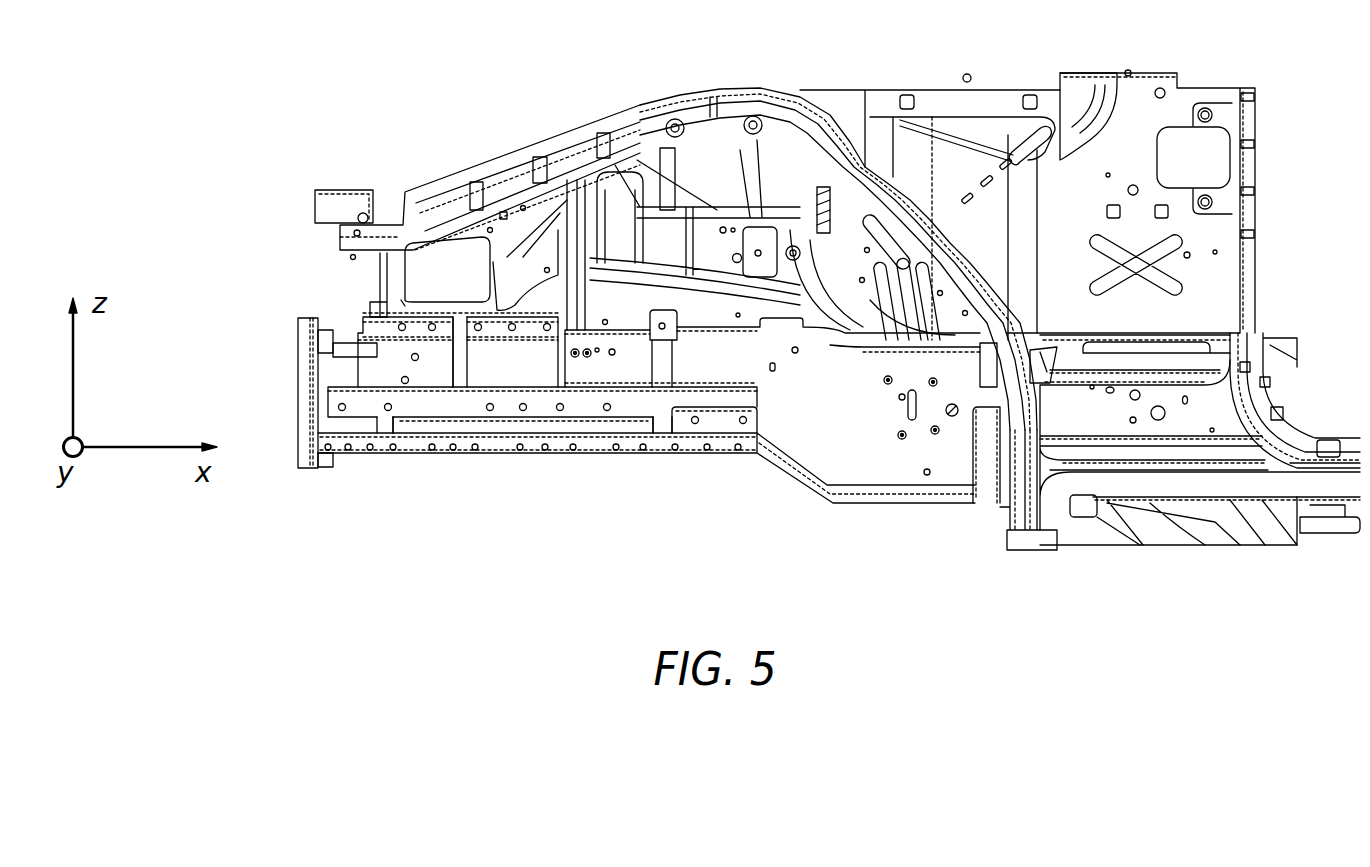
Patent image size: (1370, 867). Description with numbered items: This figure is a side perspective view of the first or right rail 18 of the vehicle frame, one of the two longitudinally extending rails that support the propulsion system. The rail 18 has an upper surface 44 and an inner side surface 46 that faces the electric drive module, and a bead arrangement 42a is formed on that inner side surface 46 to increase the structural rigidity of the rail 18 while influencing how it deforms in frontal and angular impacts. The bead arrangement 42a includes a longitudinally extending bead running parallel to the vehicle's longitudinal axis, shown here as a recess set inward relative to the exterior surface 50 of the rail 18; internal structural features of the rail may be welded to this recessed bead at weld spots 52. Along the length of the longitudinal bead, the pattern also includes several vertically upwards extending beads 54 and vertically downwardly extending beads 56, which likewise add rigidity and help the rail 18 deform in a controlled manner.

The first rail 18 is at (298, 384).
The upper surface 44 is at (442, 323).
The vertically upwards extending beads 54 is at (467, 367).
The weld spots 52 is at (543, 403).
The bead arrangement 42a is at (588, 424).
The vertically downwardly extending beads 56 is at (388, 425).
The exterior surface 50 is at (727, 422).
The inner side surface 46 is at (452, 425).